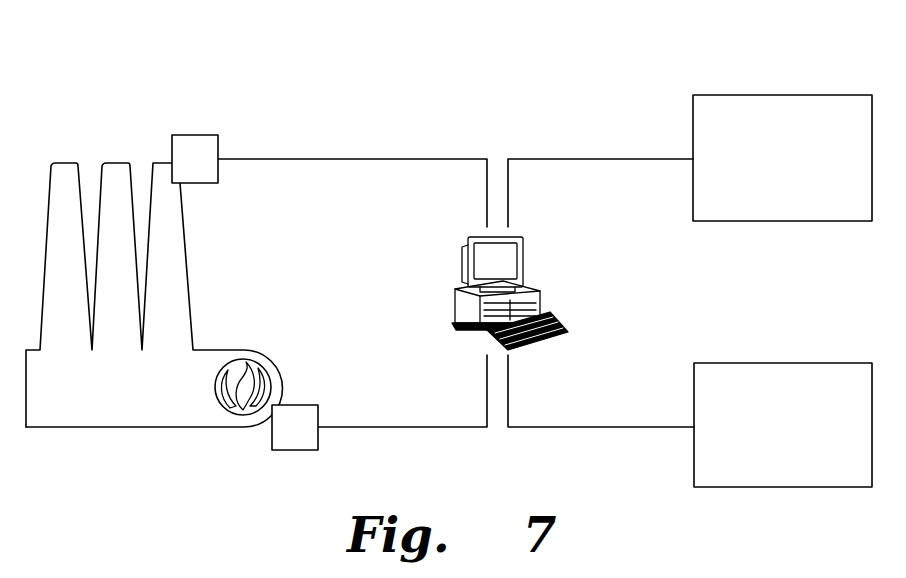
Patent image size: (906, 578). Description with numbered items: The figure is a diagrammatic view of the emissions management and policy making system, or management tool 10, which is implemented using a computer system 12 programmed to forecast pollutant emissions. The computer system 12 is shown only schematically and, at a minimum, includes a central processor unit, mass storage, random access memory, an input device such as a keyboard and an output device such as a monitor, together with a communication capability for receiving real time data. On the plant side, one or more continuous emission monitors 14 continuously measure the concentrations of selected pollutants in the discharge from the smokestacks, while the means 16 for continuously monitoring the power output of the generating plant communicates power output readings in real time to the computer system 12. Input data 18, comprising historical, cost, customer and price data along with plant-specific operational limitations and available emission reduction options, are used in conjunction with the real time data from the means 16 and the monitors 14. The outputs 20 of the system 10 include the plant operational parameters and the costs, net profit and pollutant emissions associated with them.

The management tool 10 is at (512, 105).
The computer system 12 is at (540, 297).
The continuous emission monitor 14 is at (218, 135).
The means for continuously monitoring the power output 16 is at (303, 405).
The input data 18 is at (742, 95).
The outputs 20 is at (777, 363).